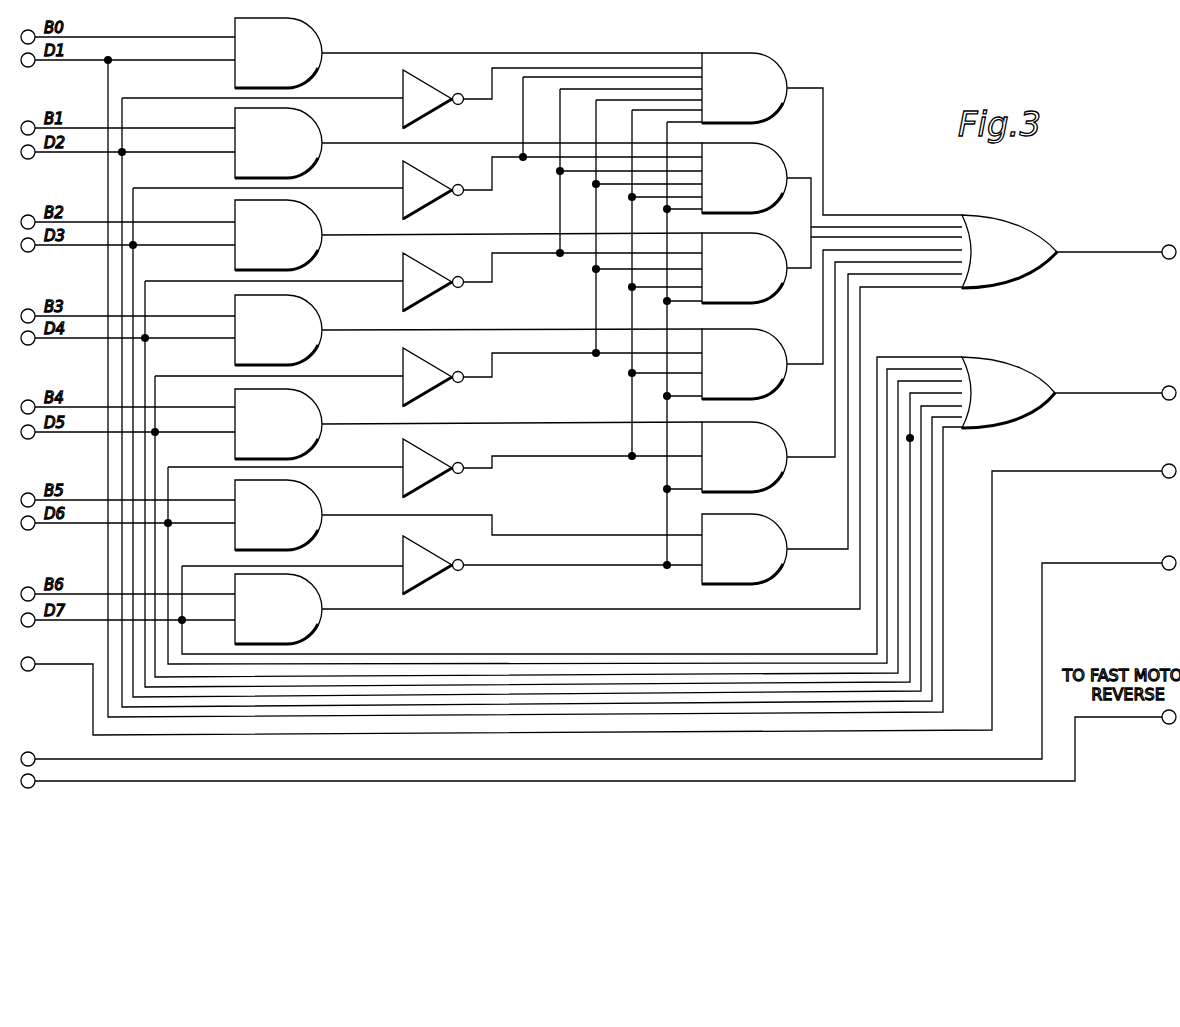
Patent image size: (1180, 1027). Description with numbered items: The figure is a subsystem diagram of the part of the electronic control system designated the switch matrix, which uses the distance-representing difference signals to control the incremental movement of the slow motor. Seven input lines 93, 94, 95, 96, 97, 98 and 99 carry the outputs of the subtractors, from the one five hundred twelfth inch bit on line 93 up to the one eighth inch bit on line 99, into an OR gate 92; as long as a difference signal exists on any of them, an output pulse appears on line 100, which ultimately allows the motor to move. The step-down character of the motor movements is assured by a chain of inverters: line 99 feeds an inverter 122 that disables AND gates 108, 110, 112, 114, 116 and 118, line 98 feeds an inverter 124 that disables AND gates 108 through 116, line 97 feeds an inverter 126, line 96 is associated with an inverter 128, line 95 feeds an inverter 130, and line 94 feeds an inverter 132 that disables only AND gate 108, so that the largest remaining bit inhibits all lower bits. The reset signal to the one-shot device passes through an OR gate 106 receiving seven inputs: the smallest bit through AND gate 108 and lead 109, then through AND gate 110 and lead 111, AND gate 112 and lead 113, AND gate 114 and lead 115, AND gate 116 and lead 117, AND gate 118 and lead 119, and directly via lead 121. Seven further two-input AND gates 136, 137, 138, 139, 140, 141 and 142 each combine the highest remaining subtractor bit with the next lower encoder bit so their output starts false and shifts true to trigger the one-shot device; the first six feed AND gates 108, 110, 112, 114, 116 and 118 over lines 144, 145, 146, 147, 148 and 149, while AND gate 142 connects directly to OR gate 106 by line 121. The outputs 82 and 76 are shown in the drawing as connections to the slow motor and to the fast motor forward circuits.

The fast motor forward output 76 is at (1122, 568).
The slow motor output 82 is at (1120, 477).
The OR gate 92 is at (1012, 432).
The input line 93 is at (946, 652).
The input line 94 is at (935, 621).
The input line 95 is at (924, 591).
The input line 96 is at (913, 565).
The input line 97 is at (834, 668).
The input line 98 is at (759, 658).
The input line 99 is at (667, 649).
The output line 100 is at (1126, 400).
The OR gate 106 is at (1040, 279).
The AND gate 108 is at (783, 110).
The lead 109 is at (828, 150).
The AND gate 110 is at (757, 212).
The lead 111 is at (815, 193).
The AND gate 112 is at (758, 302).
The lead 113 is at (875, 235).
The AND gate 114 is at (764, 400).
The lead 115 is at (819, 328).
The AND gate 116 is at (764, 490).
The lead 117 is at (832, 432).
The AND gate 118 is at (764, 582).
The lead 119 is at (930, 284).
The lead 121 is at (865, 336).
The inverter 122 is at (398, 577).
The inverter 124 is at (398, 480).
The inverter 126 is at (398, 390).
The inverter 128 is at (398, 295).
The inverter 130 is at (398, 202).
The inverter 132 is at (398, 113).
The AND gate 136 is at (233, 71).
The AND gate 137 is at (233, 161).
The AND gate 138 is at (233, 257).
The AND gate 139 is at (233, 351).
The AND gate 140 is at (233, 442).
The AND gate 141 is at (233, 534).
The AND gate 142 is at (234, 629).
The line 144 is at (442, 52).
The line 145 is at (442, 139).
The line 146 is at (442, 230).
The line 147 is at (442, 326).
The line 148 is at (442, 420).
The line 149 is at (442, 512).